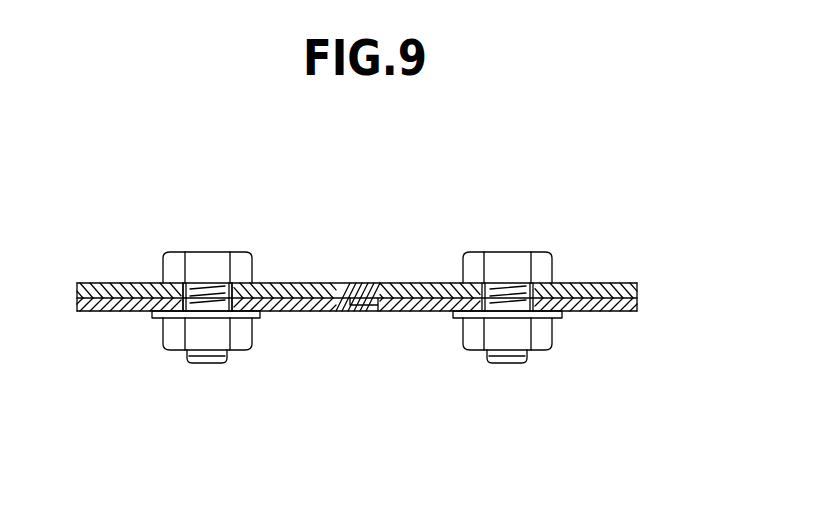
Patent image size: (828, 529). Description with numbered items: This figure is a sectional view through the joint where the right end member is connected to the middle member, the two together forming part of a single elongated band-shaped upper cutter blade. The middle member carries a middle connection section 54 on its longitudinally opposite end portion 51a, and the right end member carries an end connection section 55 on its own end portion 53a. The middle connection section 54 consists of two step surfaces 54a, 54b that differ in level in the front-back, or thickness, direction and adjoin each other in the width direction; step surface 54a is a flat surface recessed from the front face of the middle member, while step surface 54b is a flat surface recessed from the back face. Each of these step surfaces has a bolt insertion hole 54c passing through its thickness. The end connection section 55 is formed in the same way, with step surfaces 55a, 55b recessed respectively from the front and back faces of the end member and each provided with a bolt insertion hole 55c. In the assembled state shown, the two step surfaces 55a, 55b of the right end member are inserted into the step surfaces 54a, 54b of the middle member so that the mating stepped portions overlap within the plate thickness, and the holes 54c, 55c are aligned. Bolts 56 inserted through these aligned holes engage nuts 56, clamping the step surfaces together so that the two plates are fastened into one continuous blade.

The end portion of the middle member 51a is at (593, 262).
The end portion of the right end member 53a is at (592, 332).
The middle connection section 54 is at (453, 187).
The step surface 54a is at (316, 292).
The step surface 54b is at (440, 291).
The bolt insertion hole 54c is at (199, 305).
The end connection section 55 is at (418, 433).
The step surface 55a is at (373, 302).
The step surface 55b is at (312, 302).
The bolt insertion hole 55c is at (196, 292).
The bolt and nut 56 is at (215, 252).